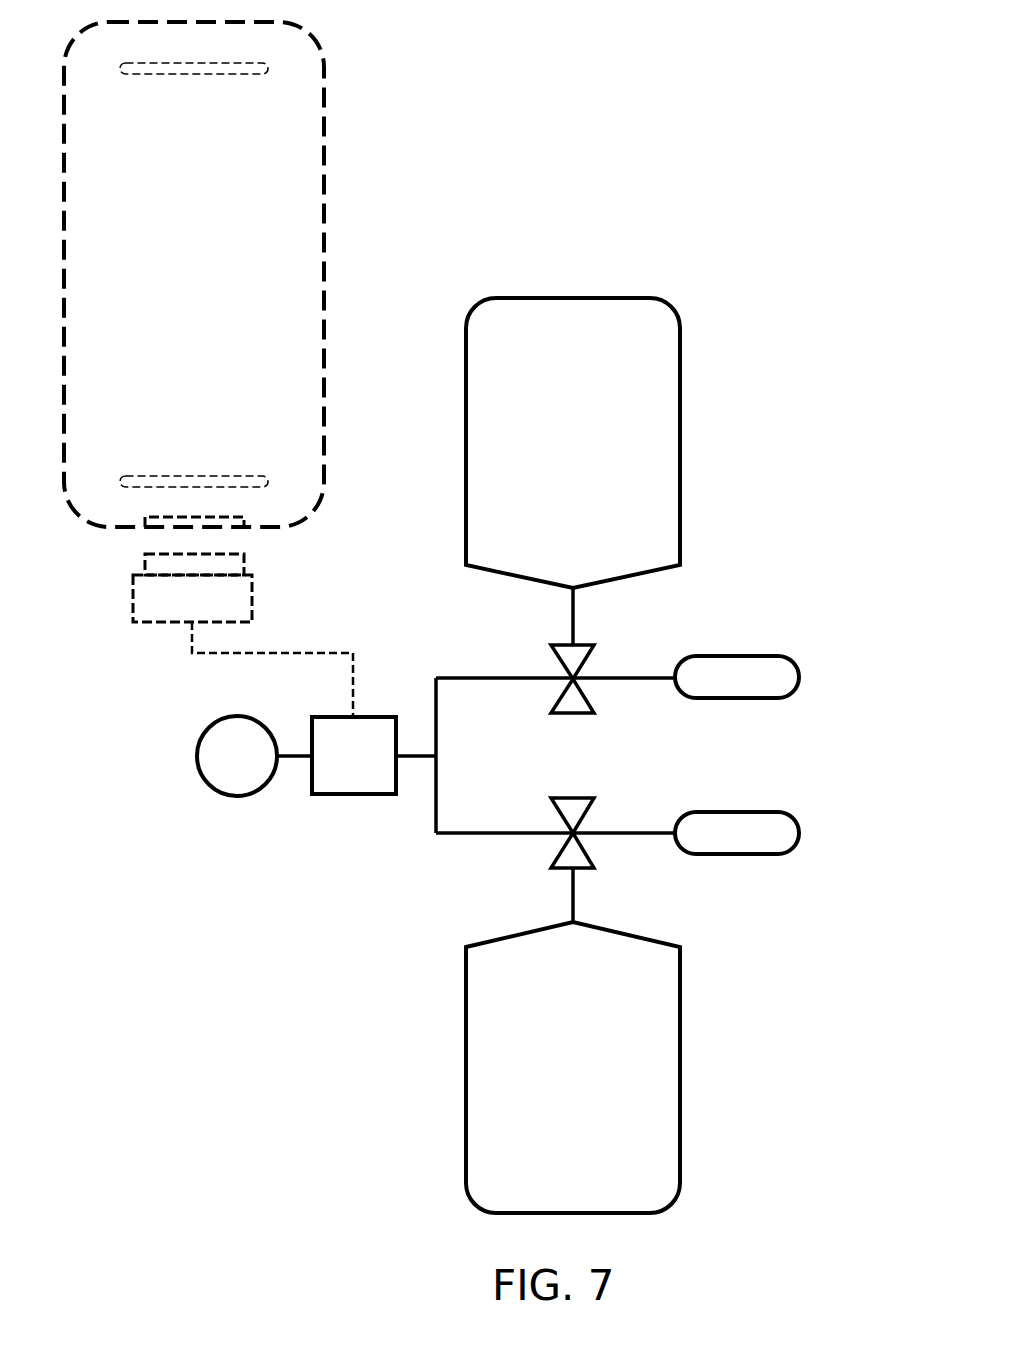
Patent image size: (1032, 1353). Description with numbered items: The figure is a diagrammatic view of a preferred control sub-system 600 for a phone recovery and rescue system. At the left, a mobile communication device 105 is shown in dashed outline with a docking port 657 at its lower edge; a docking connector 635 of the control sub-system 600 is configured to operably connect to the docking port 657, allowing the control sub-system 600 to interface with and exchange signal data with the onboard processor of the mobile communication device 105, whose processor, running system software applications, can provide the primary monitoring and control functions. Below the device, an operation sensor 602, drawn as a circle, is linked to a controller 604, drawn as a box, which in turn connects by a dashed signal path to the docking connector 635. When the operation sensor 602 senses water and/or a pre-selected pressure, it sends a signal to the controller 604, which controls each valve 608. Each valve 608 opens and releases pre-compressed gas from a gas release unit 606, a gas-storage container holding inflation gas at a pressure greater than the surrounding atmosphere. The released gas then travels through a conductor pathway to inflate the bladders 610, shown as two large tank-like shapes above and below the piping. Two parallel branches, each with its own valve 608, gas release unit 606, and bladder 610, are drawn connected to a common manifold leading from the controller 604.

The mobile communication device 105 is at (326, 352).
The docking port 657 is at (246, 521).
The docking connector 635 is at (252, 585).
The operation sensor 602 is at (222, 722).
The controller 604 is at (316, 796).
The control sub-system 600 is at (524, 244).
The valve 608 is at (583, 646).
The bladder 610 is at (680, 431).
The gas release unit 606 is at (800, 672).